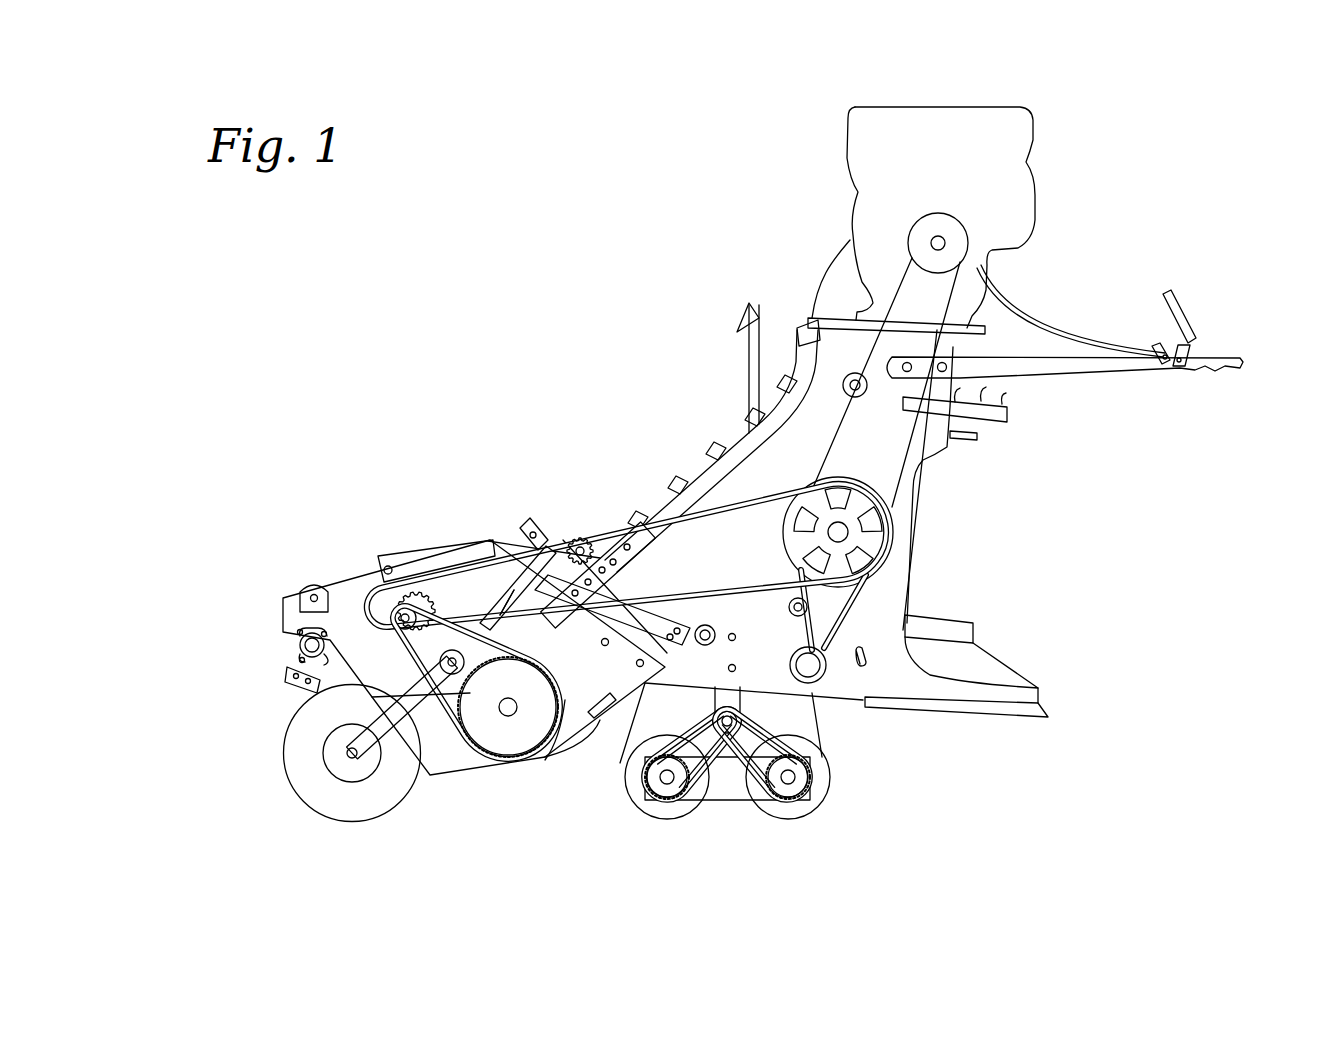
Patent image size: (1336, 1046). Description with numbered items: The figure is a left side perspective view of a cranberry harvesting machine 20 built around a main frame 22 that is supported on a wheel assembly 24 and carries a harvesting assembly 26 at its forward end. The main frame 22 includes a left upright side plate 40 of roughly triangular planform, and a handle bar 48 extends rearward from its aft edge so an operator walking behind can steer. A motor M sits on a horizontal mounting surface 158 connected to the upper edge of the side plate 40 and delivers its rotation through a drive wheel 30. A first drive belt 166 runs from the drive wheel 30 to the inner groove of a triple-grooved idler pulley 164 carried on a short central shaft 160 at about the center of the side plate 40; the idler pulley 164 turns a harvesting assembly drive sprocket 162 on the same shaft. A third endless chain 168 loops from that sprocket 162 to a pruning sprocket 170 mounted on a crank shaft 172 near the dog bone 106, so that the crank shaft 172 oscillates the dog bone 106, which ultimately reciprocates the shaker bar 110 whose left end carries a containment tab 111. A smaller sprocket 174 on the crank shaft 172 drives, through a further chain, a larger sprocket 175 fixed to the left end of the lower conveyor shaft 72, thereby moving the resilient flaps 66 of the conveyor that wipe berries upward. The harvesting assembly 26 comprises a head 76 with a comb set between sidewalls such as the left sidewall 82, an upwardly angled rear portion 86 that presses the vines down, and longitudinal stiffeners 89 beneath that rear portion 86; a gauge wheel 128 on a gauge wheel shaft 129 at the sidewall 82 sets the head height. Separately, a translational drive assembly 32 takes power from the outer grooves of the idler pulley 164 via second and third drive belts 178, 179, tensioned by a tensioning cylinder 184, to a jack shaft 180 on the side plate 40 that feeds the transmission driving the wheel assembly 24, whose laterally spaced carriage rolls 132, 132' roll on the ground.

The motor M is at (975, 122).
The cranberry harvesting machine 20 is at (515, 248).
The main frame 22 is at (750, 473).
The wheel assembly 24 is at (895, 790).
The harvesting assembly 26 is at (245, 543).
The drive wheel 30 is at (958, 232).
The translational drive assembly 32 is at (882, 611).
The left upright side plate 40 is at (917, 473).
The handle bar 48 is at (1242, 369).
The resilient flaps 66 is at (666, 480).
The lower conveyor shaft 72 is at (502, 710).
The head 76 is at (268, 700).
The left sidewall 82 is at (330, 617).
The rear portion 86 is at (570, 720).
The longitudinal stiffeners 89 is at (575, 752).
The dog bone 106 is at (295, 598).
The shaker bar 110 is at (598, 742).
The containment tab 111 is at (593, 700).
The gauge wheel 128 is at (307, 807).
The gauge wheel shaft 129 is at (330, 732).
The carriage roll 132 is at (681, 805).
The carriage roll 132' is at (825, 802).
The horizontal mounting surface 158 is at (1012, 305).
The short central shaft 160 is at (845, 532).
The harvesting assembly drive sprocket 162 is at (850, 490).
The triple-grooved idler pulley 164 is at (780, 535).
The first drive belt 166 is at (832, 418).
The third endless chain 168 is at (467, 560).
The pruning sprocket 170 is at (416, 598).
The crank shaft 172 is at (383, 603).
The smaller sprocket 174 is at (385, 600).
The larger sprocket 175 is at (505, 740).
The second drive belt 178 is at (978, 666).
The third drive belt 179 is at (858, 708).
The jack shaft 180 is at (830, 668).
The tensioning cylinder 184 is at (788, 607).